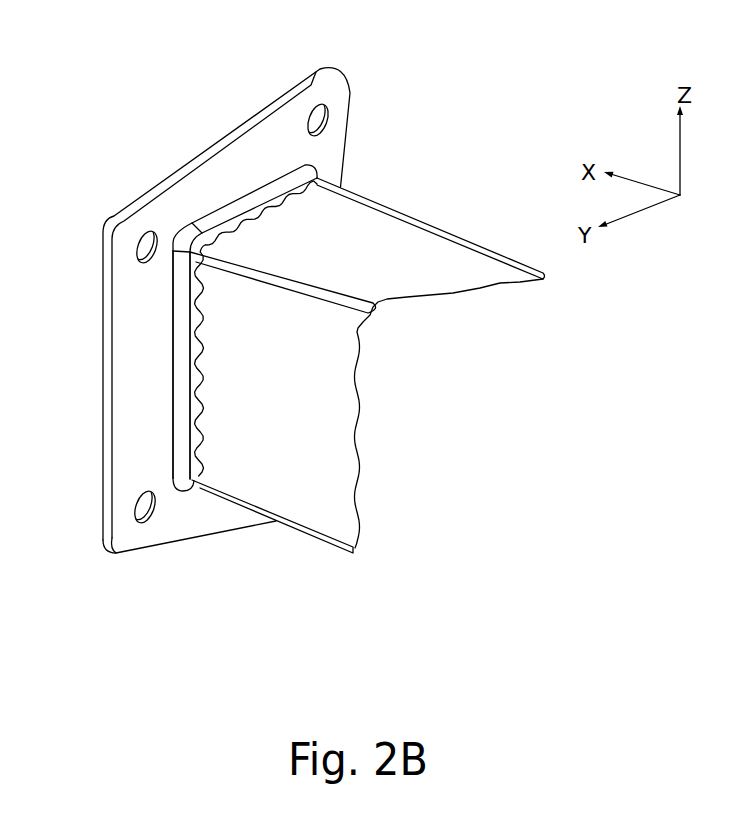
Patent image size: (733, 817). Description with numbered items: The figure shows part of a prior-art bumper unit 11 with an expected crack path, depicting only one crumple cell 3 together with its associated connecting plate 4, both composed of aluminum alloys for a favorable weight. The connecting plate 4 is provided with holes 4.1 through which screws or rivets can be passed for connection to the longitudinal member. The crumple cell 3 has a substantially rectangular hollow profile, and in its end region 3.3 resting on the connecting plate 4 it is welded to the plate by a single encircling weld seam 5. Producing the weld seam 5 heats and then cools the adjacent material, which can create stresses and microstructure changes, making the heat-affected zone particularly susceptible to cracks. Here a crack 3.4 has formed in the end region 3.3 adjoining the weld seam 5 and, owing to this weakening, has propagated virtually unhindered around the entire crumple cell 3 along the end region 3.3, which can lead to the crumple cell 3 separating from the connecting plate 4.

The bumper unit 11 is at (292, 311).
The connecting plate 4 is at (223, 177).
The holes 4.1 is at (329, 101).
The crumple cell 3 is at (282, 381).
The end region 3.3 is at (182, 306).
The crack 3.4 is at (204, 367).
The weld seam 5 is at (180, 433).